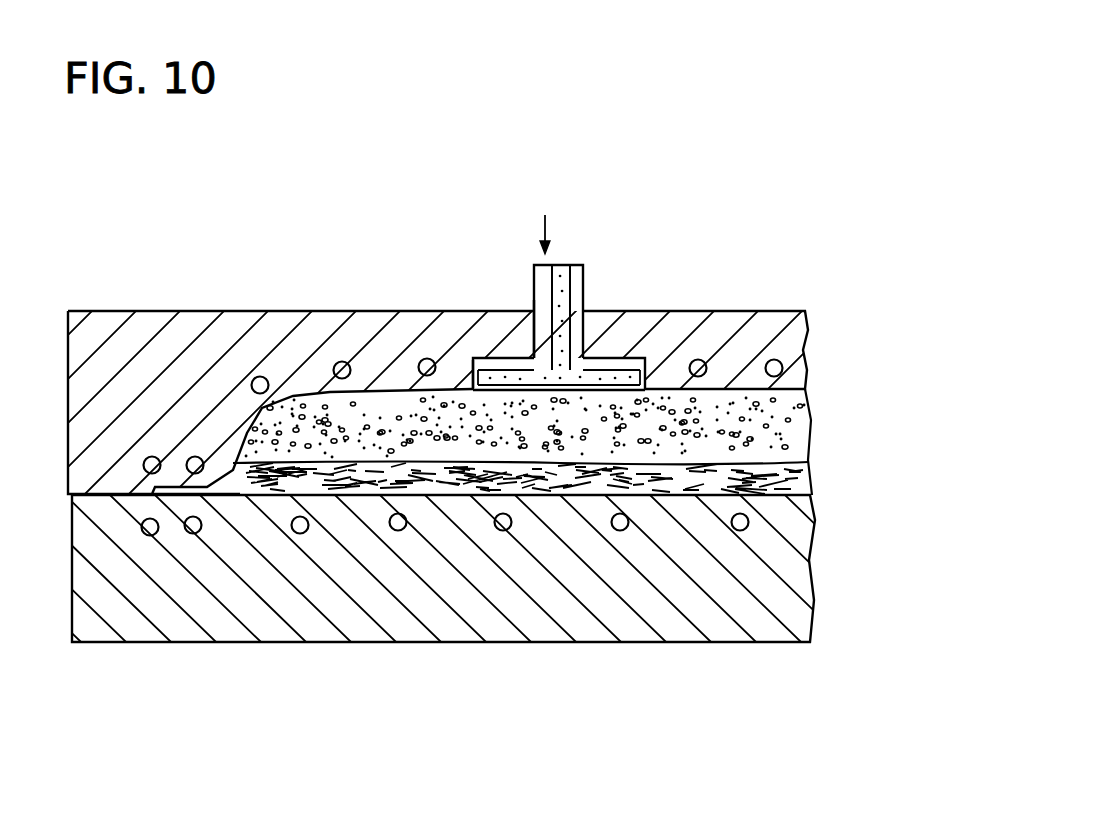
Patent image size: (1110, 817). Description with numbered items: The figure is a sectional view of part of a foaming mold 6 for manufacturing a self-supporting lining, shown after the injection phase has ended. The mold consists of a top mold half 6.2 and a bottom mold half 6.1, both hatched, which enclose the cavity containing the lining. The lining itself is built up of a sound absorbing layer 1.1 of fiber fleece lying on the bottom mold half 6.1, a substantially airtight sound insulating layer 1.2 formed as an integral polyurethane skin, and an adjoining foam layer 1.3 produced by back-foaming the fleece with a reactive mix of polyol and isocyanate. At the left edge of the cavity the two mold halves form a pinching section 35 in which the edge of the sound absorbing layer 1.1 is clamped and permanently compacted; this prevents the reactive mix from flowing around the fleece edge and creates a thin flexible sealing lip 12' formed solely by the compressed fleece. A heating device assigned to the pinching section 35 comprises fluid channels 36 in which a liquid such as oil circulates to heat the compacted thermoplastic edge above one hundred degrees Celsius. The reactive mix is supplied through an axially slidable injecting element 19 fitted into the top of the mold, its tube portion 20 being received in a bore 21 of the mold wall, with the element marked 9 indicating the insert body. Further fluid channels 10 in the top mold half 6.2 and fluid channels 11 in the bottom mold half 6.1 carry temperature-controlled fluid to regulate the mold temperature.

The foaming mold 6 is at (716, 166).
The bottom mold half 6.1 is at (793, 618).
The top mold half 6.2 is at (774, 322).
The insert / connecting piece 9 is at (565, 297).
The injecting element 19 is at (550, 213).
The tube portion 20 is at (543, 288).
The bore 21 is at (528, 333).
The fluid channels 10 is at (338, 364).
The fluid channels 11 is at (303, 532).
The fluid channels 36 is at (196, 457).
The flexible sealing lip 12' is at (176, 605).
The pinching section 35 is at (208, 497).
The sound absorbing layer 1.1 is at (470, 470).
The sound insulating layer 1.2 is at (599, 448).
The foam layer 1.3 is at (395, 417).